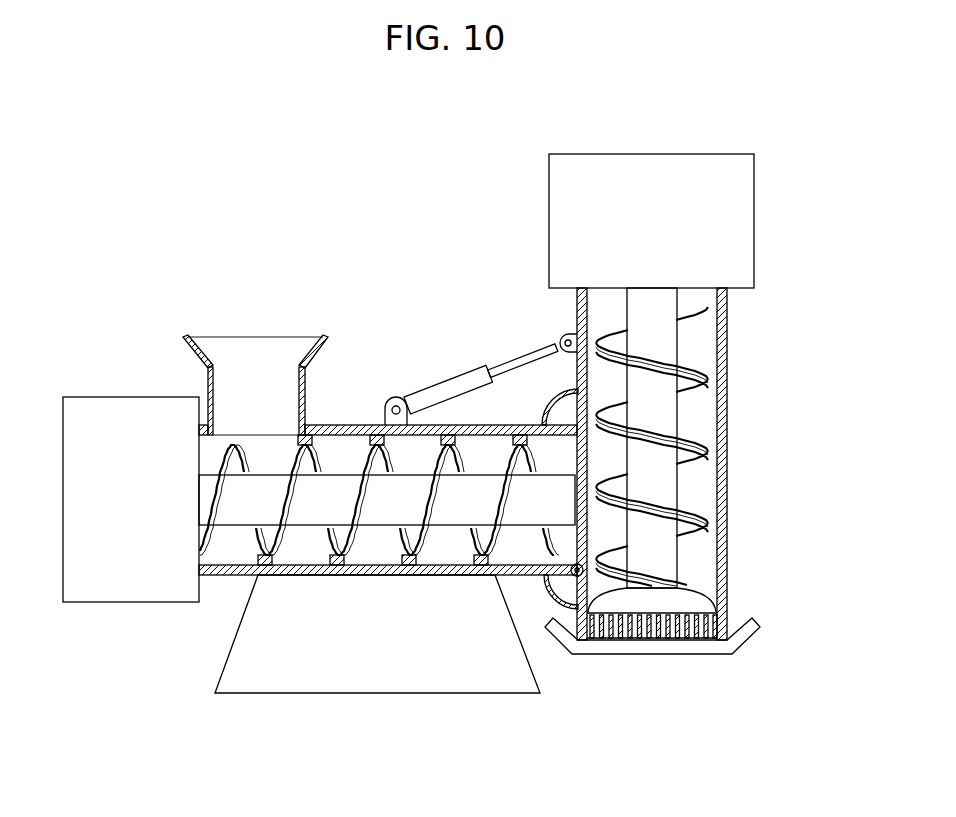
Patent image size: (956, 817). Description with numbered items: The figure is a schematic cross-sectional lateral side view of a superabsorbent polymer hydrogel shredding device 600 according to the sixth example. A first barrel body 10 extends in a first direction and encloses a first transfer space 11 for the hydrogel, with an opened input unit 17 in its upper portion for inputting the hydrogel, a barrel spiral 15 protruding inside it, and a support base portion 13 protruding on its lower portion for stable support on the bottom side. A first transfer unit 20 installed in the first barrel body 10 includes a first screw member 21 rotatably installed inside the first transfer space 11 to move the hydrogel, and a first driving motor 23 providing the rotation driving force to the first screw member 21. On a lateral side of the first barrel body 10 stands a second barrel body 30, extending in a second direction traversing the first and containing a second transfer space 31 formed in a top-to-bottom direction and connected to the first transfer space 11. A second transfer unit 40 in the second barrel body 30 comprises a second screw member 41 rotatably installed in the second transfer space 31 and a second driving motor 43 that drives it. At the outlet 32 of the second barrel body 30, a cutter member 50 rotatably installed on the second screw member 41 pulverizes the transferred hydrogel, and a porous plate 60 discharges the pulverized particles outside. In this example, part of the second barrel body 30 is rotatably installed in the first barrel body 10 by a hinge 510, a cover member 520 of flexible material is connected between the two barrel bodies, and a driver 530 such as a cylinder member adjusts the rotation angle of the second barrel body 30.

The hydrogel shredding device 600 is at (243, 196).
The first transfer unit 20 is at (227, 290).
The first driving motor 23 is at (122, 412).
The first screw member 21 is at (297, 462).
The input unit 17 is at (307, 352).
The first transfer space 11 is at (348, 453).
The barrel spiral 15 is at (378, 435).
The first barrel body 10 is at (428, 430).
The driver 530 is at (456, 385).
The cover member 520 is at (553, 402).
The second transfer unit 40 is at (800, 208).
The second driving motor 43 is at (737, 225).
The second screw member 41 is at (685, 387).
The second barrel body 30 is at (727, 405).
The second transfer space 31 is at (695, 487).
The cutter member 50 is at (690, 600).
The hinge 510 is at (609, 618).
The porous plate 60 is at (740, 636).
The outlet 32 is at (658, 650).
The support base portion 13 is at (484, 670).